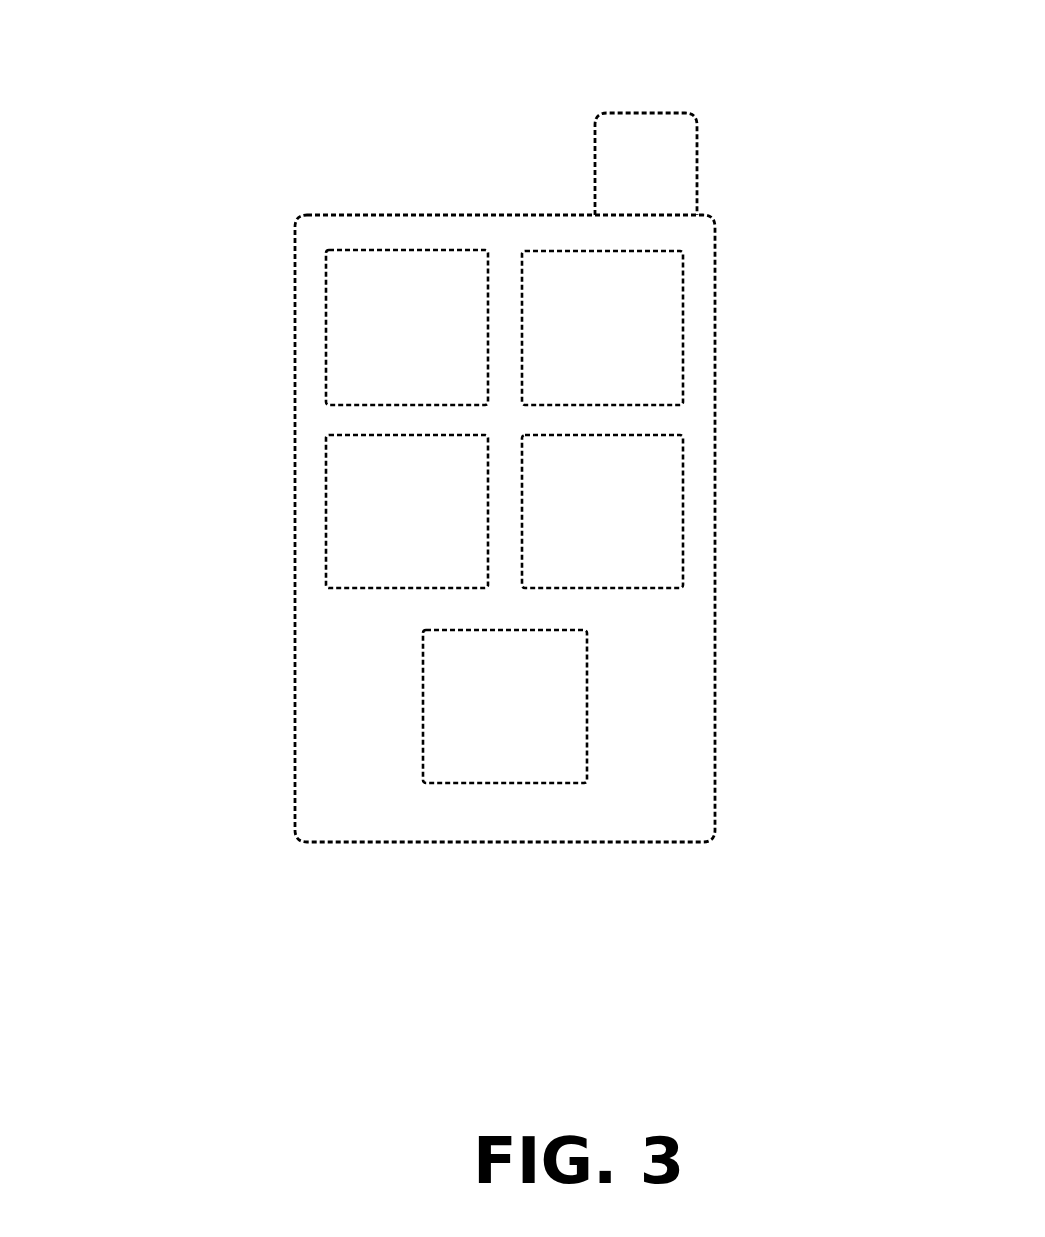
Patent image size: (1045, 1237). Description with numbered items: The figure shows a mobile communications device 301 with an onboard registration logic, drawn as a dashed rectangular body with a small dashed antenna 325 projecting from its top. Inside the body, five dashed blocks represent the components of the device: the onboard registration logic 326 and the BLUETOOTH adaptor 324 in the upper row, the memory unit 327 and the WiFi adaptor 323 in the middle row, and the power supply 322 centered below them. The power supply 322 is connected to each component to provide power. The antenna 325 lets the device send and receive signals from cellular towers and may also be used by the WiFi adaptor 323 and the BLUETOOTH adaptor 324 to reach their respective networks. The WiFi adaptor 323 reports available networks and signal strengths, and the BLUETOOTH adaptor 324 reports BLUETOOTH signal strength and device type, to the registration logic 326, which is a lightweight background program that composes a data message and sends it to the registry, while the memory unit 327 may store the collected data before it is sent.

The mobile communications device 301 is at (296, 217).
The antenna 325 is at (615, 137).
The onboard registration logic 326 is at (325, 340).
The BLUETOOTH adaptor 324 is at (683, 340).
The memory unit 327 is at (325, 525).
The WiFi adaptor 323 is at (675, 528).
The power supply 322 is at (585, 713).